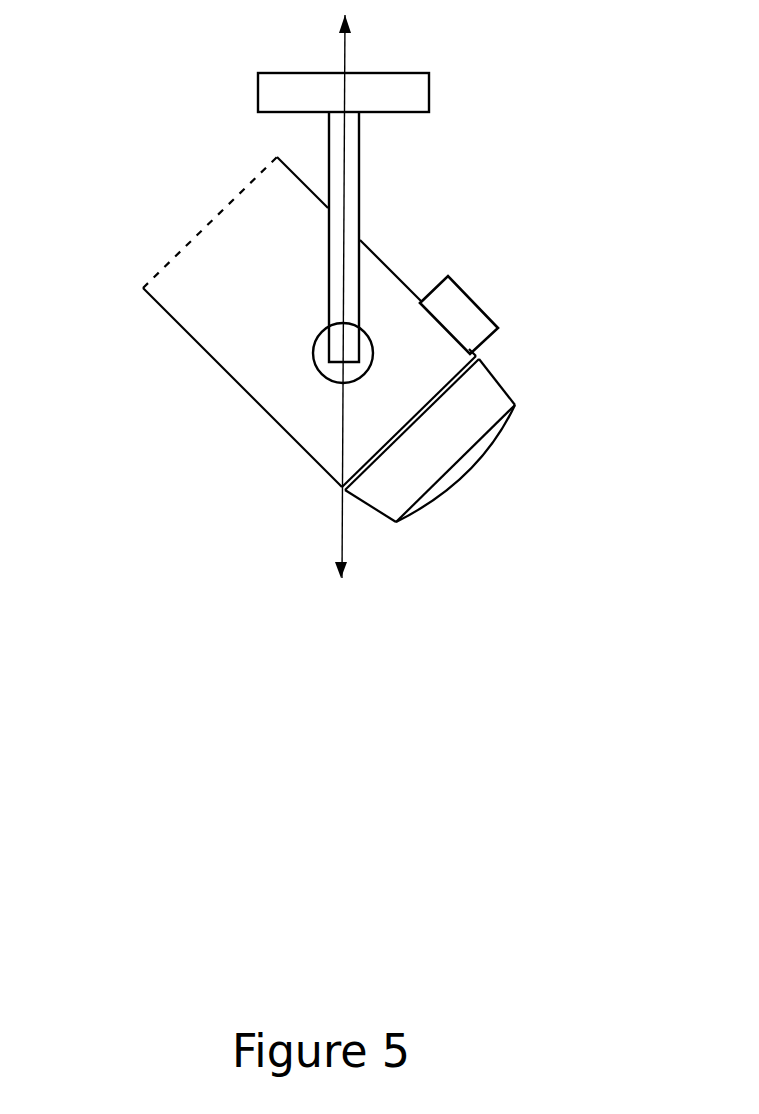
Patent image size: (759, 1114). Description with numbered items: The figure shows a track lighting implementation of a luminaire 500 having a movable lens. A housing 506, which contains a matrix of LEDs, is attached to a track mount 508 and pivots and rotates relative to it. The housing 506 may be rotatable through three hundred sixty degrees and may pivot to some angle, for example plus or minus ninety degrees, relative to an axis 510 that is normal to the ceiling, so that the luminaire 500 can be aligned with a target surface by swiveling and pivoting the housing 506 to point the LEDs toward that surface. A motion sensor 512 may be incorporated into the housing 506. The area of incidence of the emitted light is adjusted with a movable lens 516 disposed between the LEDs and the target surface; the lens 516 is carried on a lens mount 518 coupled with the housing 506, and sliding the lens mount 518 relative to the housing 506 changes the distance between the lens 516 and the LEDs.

The luminaire 500 is at (147, 68).
The housing 506 is at (193, 302).
The track mount 508 is at (354, 137).
The axis 510 is at (315, 296).
The motion sensor 512 is at (477, 303).
The movable lens 516 is at (465, 473).
The lens mount 518 is at (462, 397).